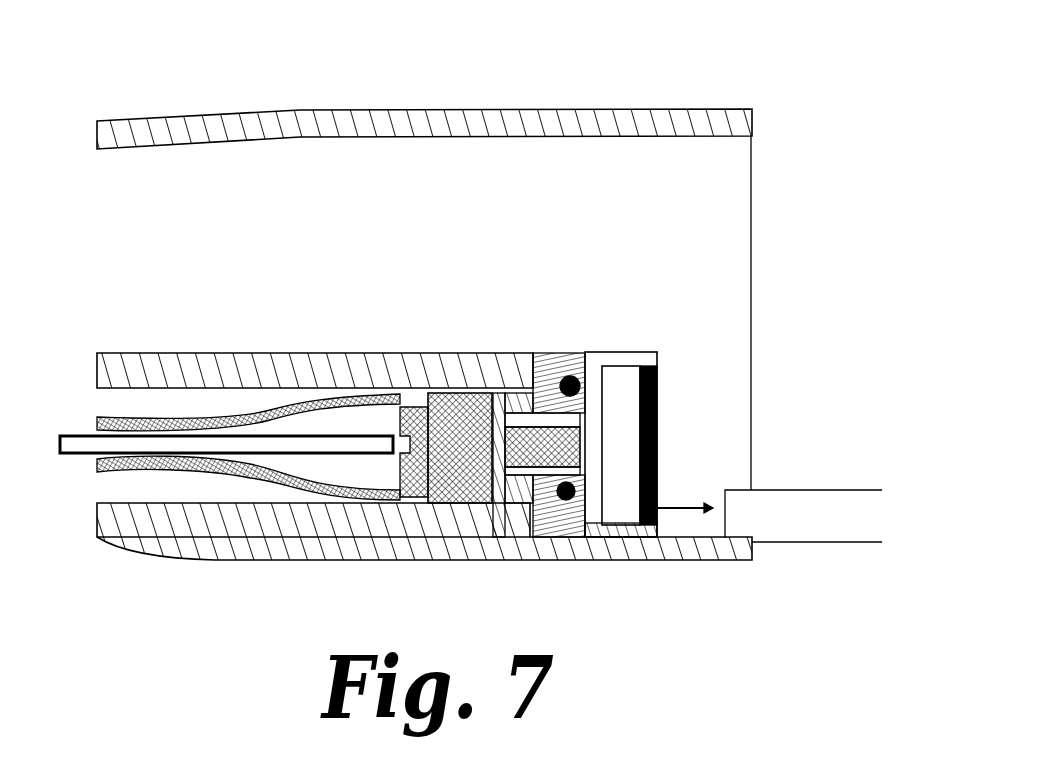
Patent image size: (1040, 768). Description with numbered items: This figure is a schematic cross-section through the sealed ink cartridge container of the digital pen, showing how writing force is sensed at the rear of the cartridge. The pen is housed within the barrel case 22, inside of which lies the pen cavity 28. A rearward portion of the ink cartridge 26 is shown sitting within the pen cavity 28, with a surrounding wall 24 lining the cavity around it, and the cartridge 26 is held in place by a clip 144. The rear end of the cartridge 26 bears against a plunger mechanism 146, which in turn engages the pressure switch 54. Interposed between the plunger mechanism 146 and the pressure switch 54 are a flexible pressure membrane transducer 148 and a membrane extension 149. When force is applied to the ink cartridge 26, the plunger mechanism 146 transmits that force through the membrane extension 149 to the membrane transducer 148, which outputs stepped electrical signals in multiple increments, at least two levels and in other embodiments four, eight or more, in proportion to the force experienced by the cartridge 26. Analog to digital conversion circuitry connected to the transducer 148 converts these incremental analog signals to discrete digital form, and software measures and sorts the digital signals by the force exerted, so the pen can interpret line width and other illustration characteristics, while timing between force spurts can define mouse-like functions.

The barrel case 22 is at (622, 122).
The inner tube wall 24 is at (377, 352).
The ink cartridge 26 is at (85, 456).
The pen cavity 28 is at (237, 211).
The pressure switch 54 is at (623, 500).
The clip 144 is at (263, 475).
The plunger mechanism 146 is at (478, 488).
The flexible pressure membrane transducer 148 is at (571, 380).
The membrane extension 149 is at (521, 442).